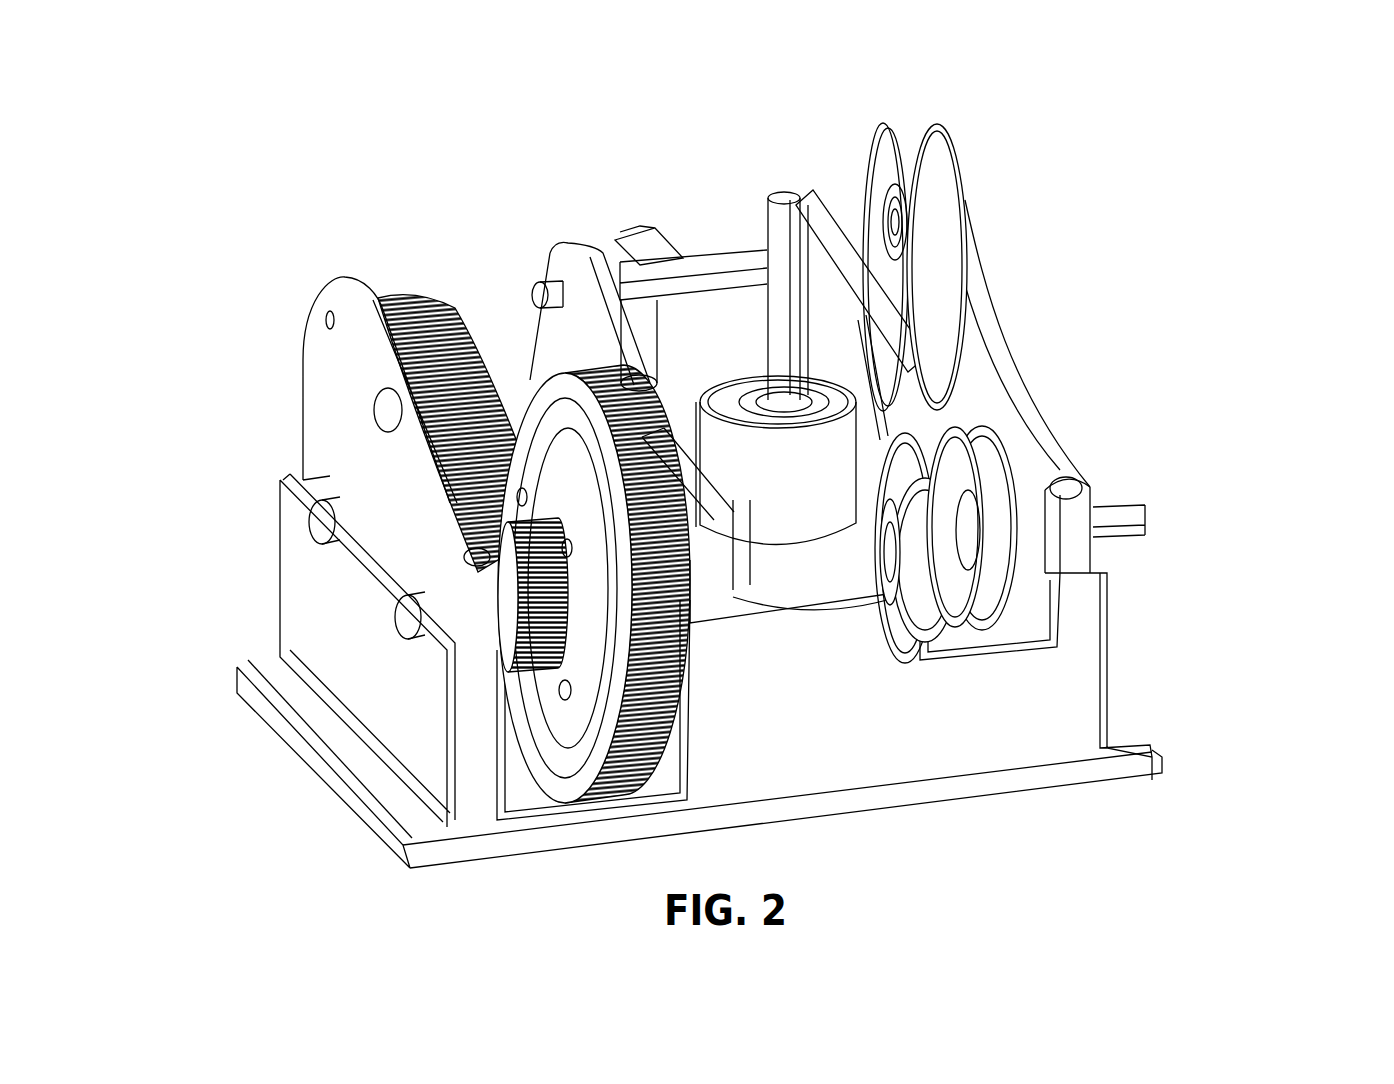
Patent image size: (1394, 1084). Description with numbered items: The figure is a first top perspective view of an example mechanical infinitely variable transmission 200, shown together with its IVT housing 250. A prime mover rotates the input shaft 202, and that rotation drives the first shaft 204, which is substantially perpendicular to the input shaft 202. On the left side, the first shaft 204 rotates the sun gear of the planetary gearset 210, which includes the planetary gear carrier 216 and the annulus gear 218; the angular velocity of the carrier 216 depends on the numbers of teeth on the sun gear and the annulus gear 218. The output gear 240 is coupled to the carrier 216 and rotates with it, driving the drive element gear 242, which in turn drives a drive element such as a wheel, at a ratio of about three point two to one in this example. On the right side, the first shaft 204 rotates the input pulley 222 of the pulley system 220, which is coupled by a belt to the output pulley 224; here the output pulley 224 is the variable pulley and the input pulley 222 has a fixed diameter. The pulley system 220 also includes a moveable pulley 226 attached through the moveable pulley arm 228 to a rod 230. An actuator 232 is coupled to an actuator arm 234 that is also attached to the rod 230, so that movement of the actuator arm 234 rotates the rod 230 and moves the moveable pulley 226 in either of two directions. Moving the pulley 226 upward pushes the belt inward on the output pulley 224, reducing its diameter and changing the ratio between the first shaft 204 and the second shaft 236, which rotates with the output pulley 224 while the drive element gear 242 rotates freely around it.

The mechanical infinitely variable transmission (IVT) 200 is at (702, 474).
The input shaft 202 is at (783, 228).
The first shaft 204 is at (1113, 532).
The planetary gearset 210 is at (468, 629).
The planetary gear carrier 216 is at (580, 713).
The annulus gear 218 is at (662, 660).
The pulley system 220 is at (1043, 489).
The input pulley 222 is at (1024, 641).
The output pulley 224 is at (882, 438).
The moveable pulley 226 is at (938, 310).
The moveable pulley arm 228 is at (877, 332).
The rod 230 is at (557, 313).
The actuator 232 is at (633, 355).
The actuator arm 234 is at (643, 257).
The second shaft 236 is at (693, 470).
The output gear 240 is at (317, 656).
The drive element gear 242 is at (463, 523).
The IVT housing 250 is at (1100, 677).